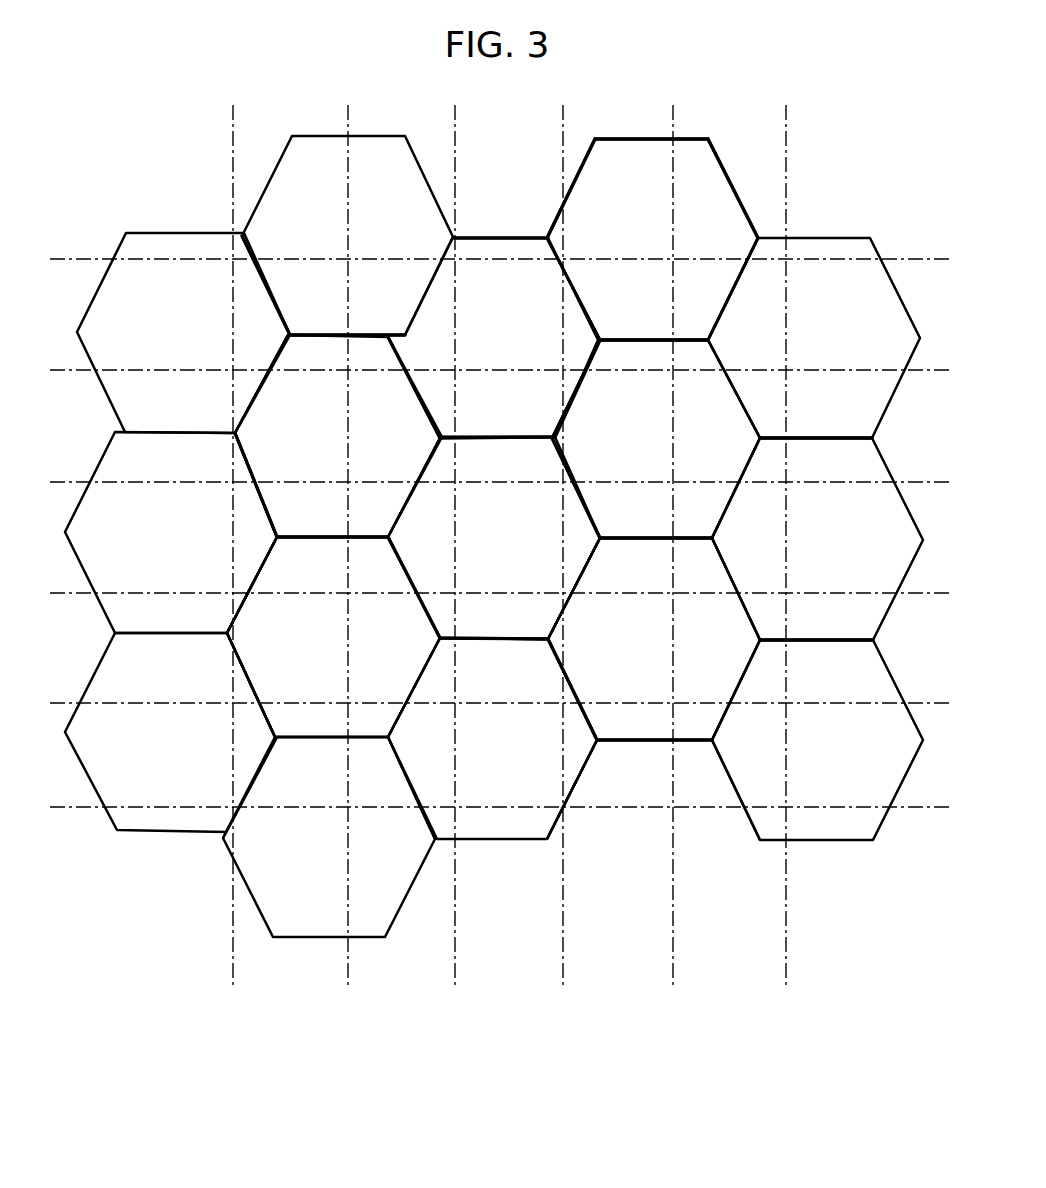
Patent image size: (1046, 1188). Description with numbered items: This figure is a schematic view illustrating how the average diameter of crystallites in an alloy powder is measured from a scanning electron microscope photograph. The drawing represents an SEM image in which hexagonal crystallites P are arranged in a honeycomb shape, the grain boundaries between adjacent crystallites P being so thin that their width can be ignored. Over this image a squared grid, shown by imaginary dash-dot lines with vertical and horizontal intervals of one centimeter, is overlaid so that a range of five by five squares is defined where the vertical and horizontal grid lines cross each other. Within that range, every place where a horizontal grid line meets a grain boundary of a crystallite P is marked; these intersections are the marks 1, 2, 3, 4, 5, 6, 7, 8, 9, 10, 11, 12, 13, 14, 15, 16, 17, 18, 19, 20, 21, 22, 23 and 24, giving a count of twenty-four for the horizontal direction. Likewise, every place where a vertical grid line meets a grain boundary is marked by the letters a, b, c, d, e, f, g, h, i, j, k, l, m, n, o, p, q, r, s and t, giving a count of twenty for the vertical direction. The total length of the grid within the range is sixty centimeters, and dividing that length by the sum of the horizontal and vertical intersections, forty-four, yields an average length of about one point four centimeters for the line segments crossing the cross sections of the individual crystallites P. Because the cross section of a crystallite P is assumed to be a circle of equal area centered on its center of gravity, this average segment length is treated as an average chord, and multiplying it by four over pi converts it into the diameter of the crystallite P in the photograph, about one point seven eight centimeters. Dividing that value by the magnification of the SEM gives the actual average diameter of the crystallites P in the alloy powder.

The crystallite P is at (710, 183).
The intersection mark 1 is at (255, 258).
The intersection mark 2 is at (440, 258).
The intersection mark 3 is at (560, 247).
The intersection mark 4 is at (743, 250).
The intersection mark 5 is at (270, 370).
The intersection mark 6 is at (405, 370).
The intersection mark 7 is at (580, 360).
The intersection mark 8 is at (722, 370).
The intersection mark 9 is at (250, 480).
The intersection mark 10 is at (415, 480).
The intersection mark 11 is at (575, 480).
The intersection mark 12 is at (740, 480).
The intersection mark 13 is at (245, 590).
The intersection mark 14 is at (410, 592).
The intersection mark 15 is at (578, 595).
The intersection mark 16 is at (733, 598).
The intersection mark 17 is at (258, 700).
The intersection mark 18 is at (402, 700).
The intersection mark 19 is at (583, 698).
The intersection mark 20 is at (730, 700).
The intersection mark 21 is at (242, 815).
The intersection mark 22 is at (418, 815).
The intersection mark 23 is at (563, 807).
The intersection mark 24 is at (743, 808).
The intersection mark a is at (233, 432).
The intersection mark b is at (230, 447).
The intersection mark c is at (233, 613).
The intersection mark d is at (233, 657).
The intersection mark e is at (345, 335).
The intersection mark f is at (347, 537).
The intersection mark g is at (345, 738).
The intersection mark h is at (455, 435).
The intersection mark i is at (455, 640).
The intersection mark j is at (565, 282).
The intersection mark k is at (565, 413).
The intersection mark l is at (557, 470).
The intersection mark m is at (565, 605).
The intersection mark n is at (557, 683).
The intersection mark o is at (563, 800).
The intersection mark p is at (673, 337).
The intersection mark q is at (673, 537).
The intersection mark r is at (672, 740).
The intersection mark s is at (785, 437).
The intersection mark t is at (788, 640).